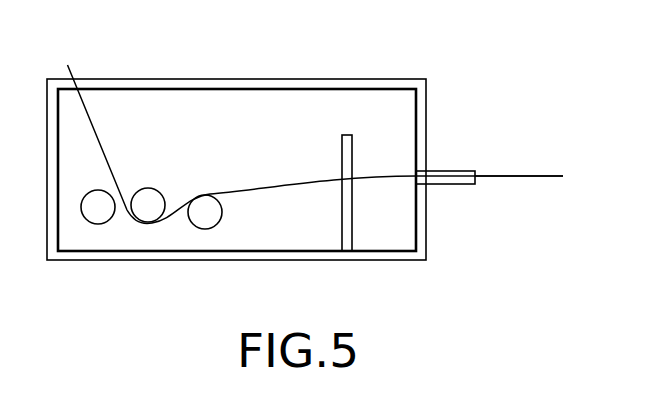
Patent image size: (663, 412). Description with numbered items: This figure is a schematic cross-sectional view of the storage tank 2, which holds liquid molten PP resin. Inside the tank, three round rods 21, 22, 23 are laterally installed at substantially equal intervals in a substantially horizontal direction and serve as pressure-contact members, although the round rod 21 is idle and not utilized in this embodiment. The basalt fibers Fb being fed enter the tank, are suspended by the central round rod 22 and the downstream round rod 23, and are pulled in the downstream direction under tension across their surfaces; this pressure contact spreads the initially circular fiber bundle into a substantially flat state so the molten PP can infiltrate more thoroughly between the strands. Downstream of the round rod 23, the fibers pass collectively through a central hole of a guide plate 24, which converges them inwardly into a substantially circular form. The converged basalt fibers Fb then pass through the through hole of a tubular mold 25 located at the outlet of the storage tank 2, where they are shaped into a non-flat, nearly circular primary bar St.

The storage tank 2 is at (281, 79).
The basalt fibers Fb is at (103, 153).
The round rod 21 is at (96, 224).
The round rod 22 is at (154, 189).
The round rod 23 is at (214, 227).
The guide plate 24 is at (350, 215).
The tubular mold 25 is at (440, 172).
The primary bar St is at (517, 176).